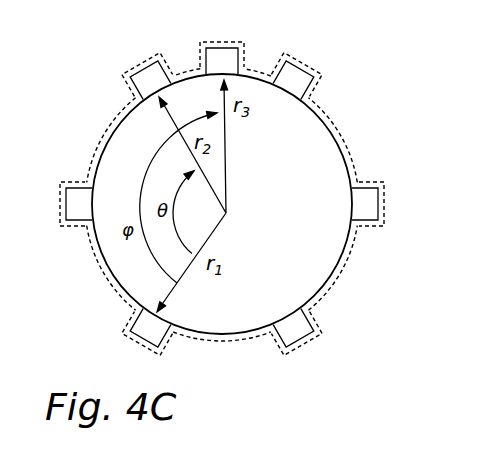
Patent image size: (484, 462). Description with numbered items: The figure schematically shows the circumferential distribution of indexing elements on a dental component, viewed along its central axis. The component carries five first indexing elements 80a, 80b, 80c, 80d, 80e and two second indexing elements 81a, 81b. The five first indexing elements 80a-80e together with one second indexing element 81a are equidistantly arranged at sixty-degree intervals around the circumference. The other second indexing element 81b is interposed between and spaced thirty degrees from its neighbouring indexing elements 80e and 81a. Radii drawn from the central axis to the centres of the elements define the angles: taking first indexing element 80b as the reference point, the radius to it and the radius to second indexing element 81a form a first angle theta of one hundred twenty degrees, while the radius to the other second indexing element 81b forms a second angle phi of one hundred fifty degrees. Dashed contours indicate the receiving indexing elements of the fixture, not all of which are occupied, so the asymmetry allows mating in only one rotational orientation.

The first indexing element 80a is at (73, 208).
The first indexing element 80b is at (155, 330).
The first indexing element 80c is at (288, 340).
The first indexing element 80d is at (370, 210).
The first indexing element 80e is at (302, 82).
The second indexing element 81a is at (150, 85).
The second indexing element 81b is at (224, 62).